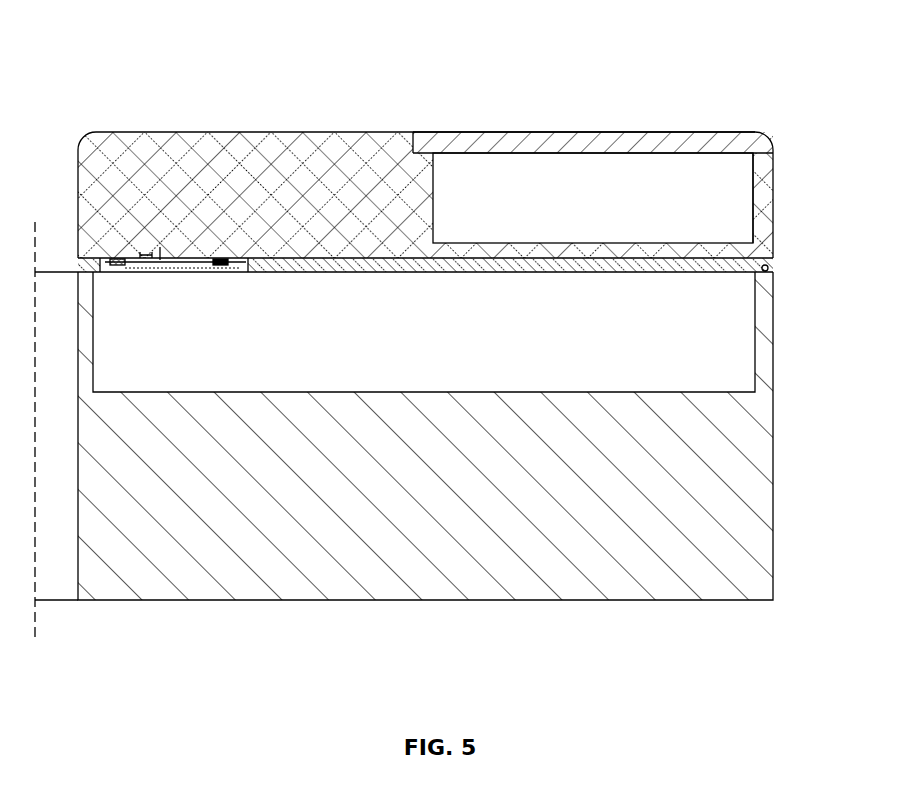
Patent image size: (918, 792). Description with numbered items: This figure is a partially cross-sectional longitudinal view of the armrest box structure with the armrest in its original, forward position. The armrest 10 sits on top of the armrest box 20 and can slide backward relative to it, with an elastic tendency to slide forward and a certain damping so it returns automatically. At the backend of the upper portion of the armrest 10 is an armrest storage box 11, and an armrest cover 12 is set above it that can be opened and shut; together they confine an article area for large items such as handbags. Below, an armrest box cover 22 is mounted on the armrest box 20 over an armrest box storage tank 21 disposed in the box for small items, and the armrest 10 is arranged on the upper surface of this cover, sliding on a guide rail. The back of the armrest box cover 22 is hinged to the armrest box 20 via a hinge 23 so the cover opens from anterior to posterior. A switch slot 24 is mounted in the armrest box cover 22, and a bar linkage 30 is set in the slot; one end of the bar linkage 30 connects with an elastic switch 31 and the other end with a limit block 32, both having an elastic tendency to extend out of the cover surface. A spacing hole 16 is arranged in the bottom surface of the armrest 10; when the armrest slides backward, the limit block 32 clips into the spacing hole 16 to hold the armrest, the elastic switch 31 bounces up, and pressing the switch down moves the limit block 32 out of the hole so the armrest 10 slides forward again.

The armrest 10 is at (352, 195).
The armrest storage box 11 is at (620, 187).
The armrest cover 12 is at (530, 153).
The spacing hole 16 is at (143, 252).
The armrest box 20 is at (548, 560).
The armrest box storage tank 21 is at (425, 345).
The armrest box cover 22 is at (678, 260).
The hinge 23 is at (772, 262).
The switch slot 24 is at (290, 262).
The bar linkage 30 is at (215, 258).
The elastic switch 31 is at (119, 258).
The limit block 32 is at (223, 258).